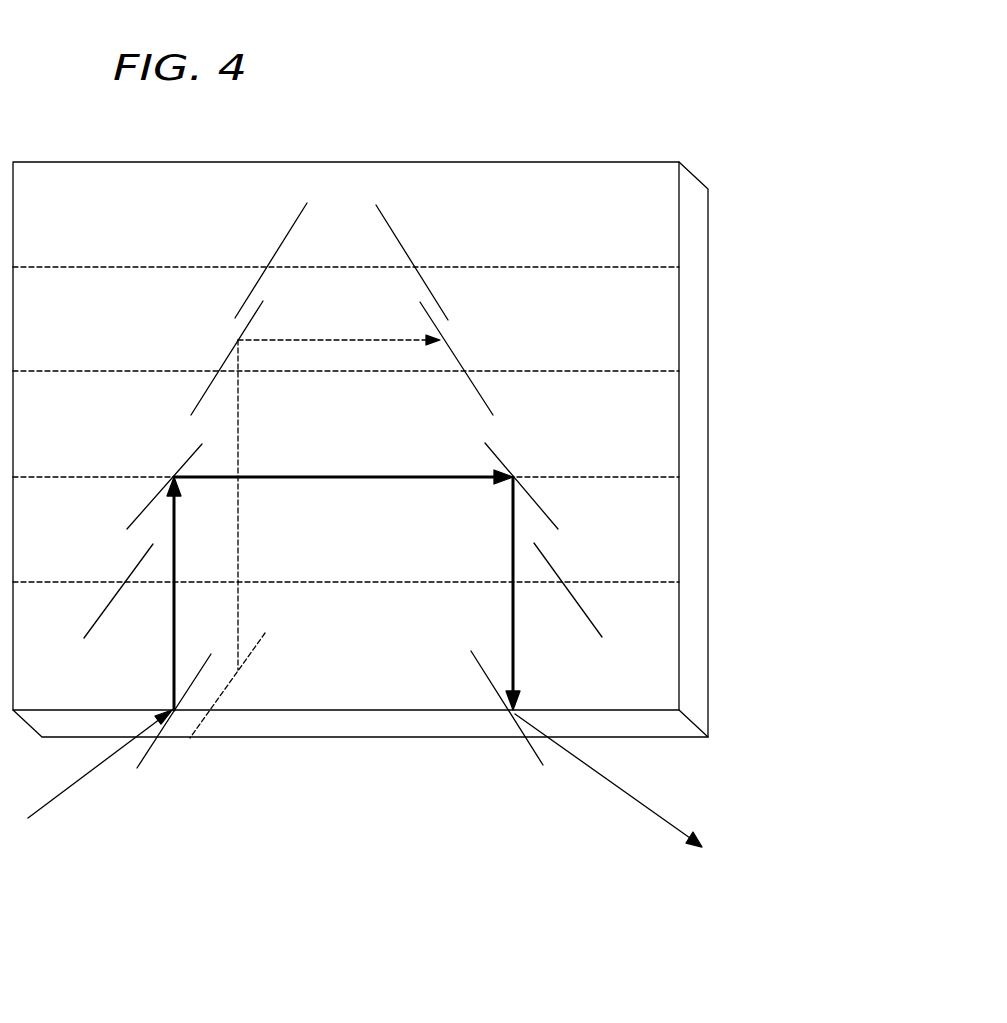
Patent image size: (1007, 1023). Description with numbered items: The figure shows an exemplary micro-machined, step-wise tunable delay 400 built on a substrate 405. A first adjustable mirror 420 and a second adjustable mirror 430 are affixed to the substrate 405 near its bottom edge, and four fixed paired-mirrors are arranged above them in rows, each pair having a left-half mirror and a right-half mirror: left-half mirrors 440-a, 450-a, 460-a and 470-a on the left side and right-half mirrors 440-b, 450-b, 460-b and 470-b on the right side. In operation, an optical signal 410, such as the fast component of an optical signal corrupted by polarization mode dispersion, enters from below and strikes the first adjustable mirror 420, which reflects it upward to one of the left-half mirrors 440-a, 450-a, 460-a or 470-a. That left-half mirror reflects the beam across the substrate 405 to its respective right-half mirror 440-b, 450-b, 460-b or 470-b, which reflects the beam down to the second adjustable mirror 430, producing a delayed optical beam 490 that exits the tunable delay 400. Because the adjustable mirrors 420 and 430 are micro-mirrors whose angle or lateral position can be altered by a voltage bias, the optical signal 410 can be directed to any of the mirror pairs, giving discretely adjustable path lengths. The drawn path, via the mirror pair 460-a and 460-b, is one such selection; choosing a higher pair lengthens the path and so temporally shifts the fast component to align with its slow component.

The tunable delay 400 is at (523, 103).
The substrate 405 is at (708, 432).
The optical signal 410 is at (62, 793).
The first adjustable mirror 420 is at (197, 678).
The second adjustable mirror 430 is at (480, 668).
The left-half mirror 440-a is at (278, 248).
The right-half mirror 440-b is at (406, 248).
The left-half mirror 450-a is at (222, 365).
The right-half mirror 450-b is at (462, 363).
The left-half mirror 460-a is at (172, 472).
The right-half mirror 460-b is at (515, 472).
The left-half mirror 470-a is at (128, 577).
The right-half mirror 470-b is at (559, 577).
The delayed optical beam 490 is at (620, 790).